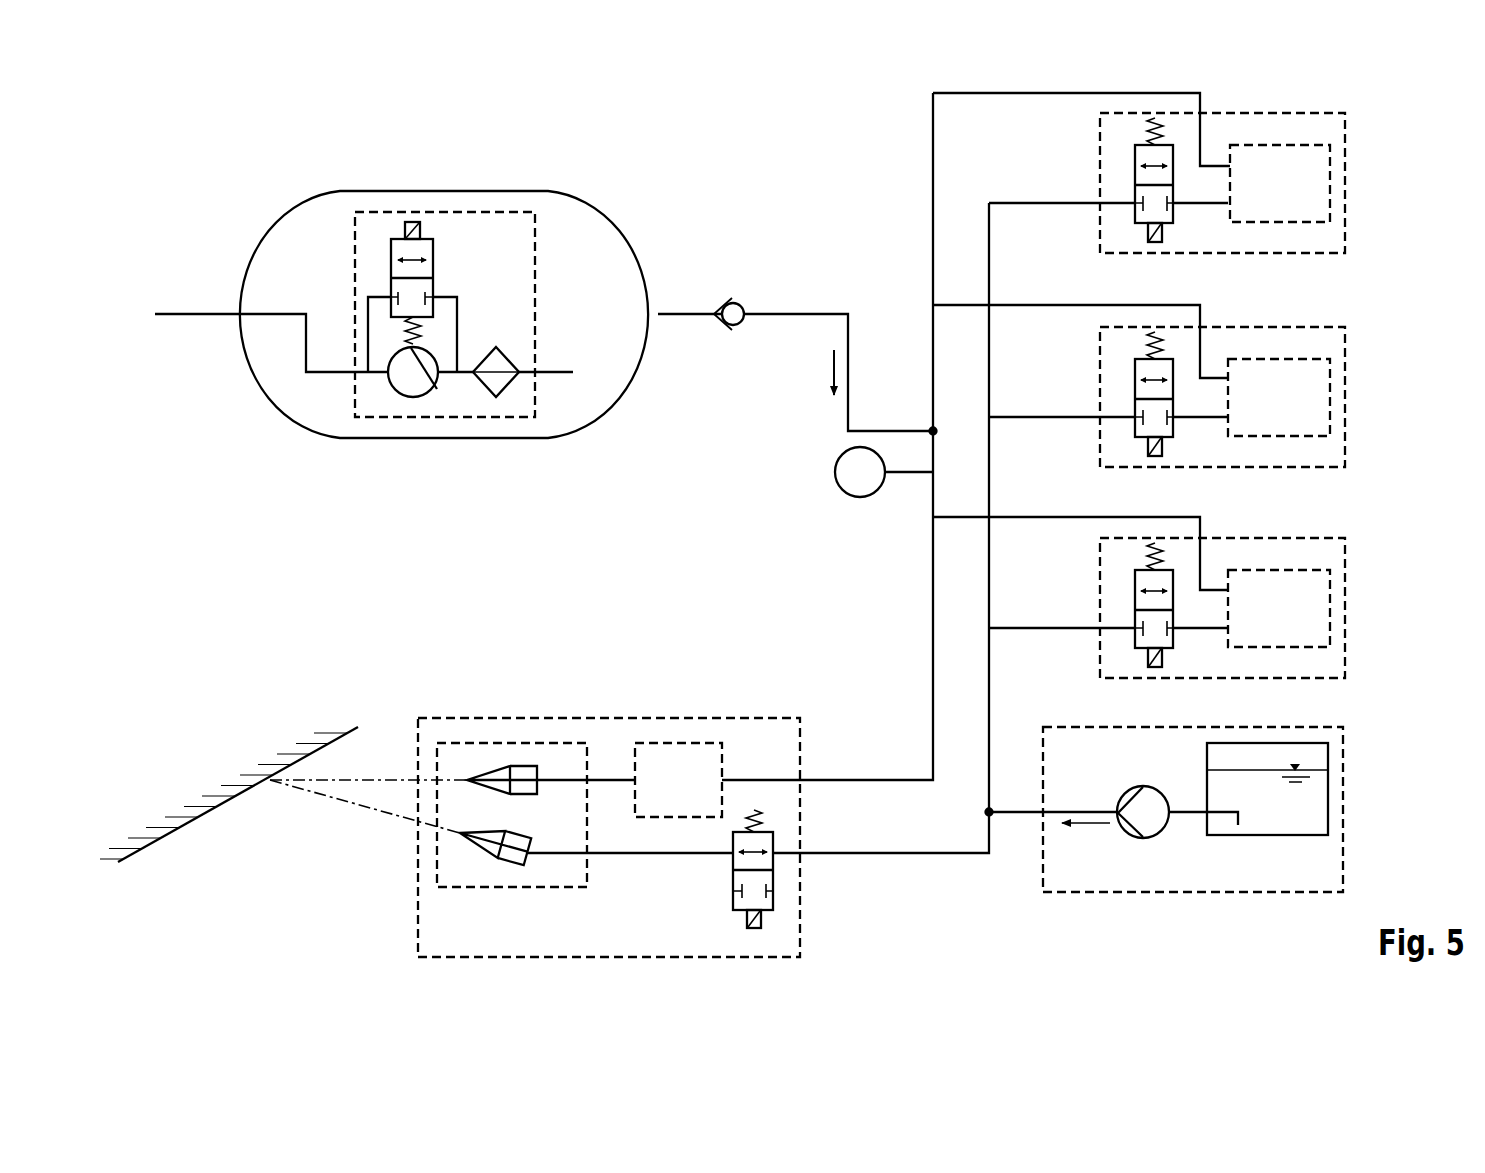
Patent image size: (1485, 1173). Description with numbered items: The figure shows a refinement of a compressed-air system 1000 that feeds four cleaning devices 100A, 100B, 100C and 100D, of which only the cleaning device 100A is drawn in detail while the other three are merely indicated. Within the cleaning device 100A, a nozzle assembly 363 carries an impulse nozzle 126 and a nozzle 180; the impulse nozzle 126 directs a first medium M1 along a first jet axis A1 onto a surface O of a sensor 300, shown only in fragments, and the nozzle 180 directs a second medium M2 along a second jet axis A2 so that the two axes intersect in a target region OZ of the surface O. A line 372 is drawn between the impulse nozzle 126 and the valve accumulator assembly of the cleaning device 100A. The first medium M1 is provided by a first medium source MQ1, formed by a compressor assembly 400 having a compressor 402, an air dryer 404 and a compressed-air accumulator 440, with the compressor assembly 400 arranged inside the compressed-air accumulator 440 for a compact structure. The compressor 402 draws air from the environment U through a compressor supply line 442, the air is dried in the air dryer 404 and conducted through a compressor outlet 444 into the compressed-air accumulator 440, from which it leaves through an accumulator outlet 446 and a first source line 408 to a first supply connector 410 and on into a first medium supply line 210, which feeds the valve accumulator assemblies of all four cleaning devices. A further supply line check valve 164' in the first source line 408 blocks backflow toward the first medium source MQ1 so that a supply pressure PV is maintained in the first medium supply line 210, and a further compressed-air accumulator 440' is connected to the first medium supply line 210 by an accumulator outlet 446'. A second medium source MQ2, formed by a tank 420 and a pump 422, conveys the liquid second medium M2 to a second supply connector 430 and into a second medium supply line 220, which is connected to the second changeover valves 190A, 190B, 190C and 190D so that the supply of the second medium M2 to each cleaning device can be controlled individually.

The compressed-air system 1000 is at (190, 114).
The cleaning device 100A is at (738, 706).
The cleaning device 100B is at (1354, 154).
The cleaning device 100C is at (1354, 366).
The cleaning device 100D is at (1354, 577).
The impulse nozzle 126 is at (522, 766).
The nozzle 180 is at (513, 866).
The second changeover valve 190A is at (722, 892).
The second changeover valve 190B is at (1130, 182).
The second changeover valve 190C is at (1130, 396).
The second changeover valve 190D is at (1130, 607).
The first medium supply line 210 is at (933, 638).
The second medium supply line 220 is at (922, 855).
The sensor 300 is at (200, 772).
The nozzle assembly 363 is at (460, 742).
The connection line 372 is at (608, 779).
The compressor assembly 400 is at (481, 211).
The compressor 402 is at (414, 398).
The air dryer 404 is at (497, 398).
The first source line 408 is at (820, 313).
The first supply connector 410 is at (931, 430).
The tank 420 is at (1287, 839).
The pump 422 is at (1146, 840).
The second supply connector 430 is at (988, 812).
The compressed-air accumulator 440 is at (412, 240).
The further compressed-air accumulator 440' is at (811, 472).
The compressor supply line 442 is at (183, 313).
The compressor outlet 444 is at (541, 372).
The accumulator outlet 446 is at (677, 272).
The accumulator outlet 446' is at (934, 424).
The further supply line check valve 164' is at (735, 280).
The first medium source MQ1 is at (602, 186).
The second medium source MQ2 is at (1356, 814).
The first medium M1 is at (833, 367).
The second medium M2 is at (1090, 826).
The supply pressure PV is at (602, 386).
The environment U is at (181, 343).
The surface O is at (175, 837).
The target region OZ is at (263, 790).
The first jet axis A1 is at (372, 779).
The second jet axis A2 is at (347, 804).